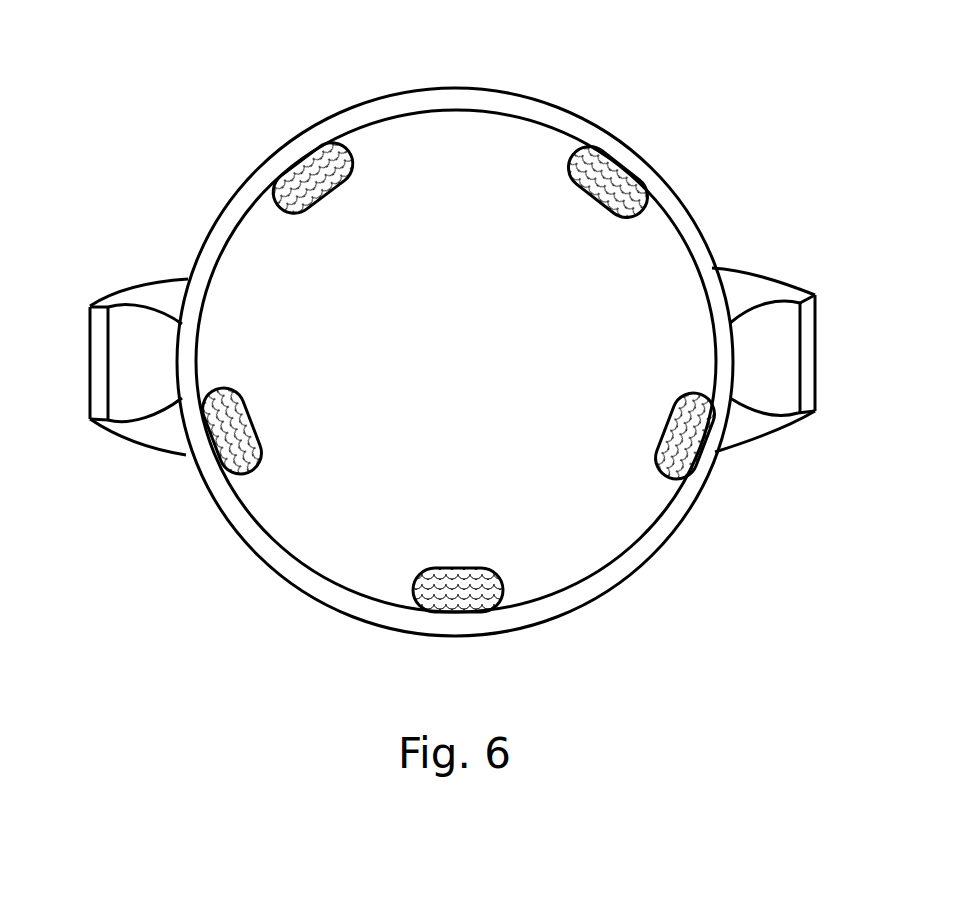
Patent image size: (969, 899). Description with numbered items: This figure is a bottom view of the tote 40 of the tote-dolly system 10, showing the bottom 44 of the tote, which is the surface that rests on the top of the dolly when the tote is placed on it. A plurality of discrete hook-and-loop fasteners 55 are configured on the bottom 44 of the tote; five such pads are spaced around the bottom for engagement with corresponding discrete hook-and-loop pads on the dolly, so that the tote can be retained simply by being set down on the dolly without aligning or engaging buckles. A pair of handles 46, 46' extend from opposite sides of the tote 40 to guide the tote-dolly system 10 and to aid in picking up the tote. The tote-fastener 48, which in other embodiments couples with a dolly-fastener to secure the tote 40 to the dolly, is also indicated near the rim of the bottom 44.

The tote-dolly system 10 is at (255, 133).
The tote 40 is at (244, 198).
The bottom of the tote 44 is at (382, 178).
The handle 46 is at (108, 328).
The handle 46' is at (807, 329).
The tote-fastener 48 is at (632, 168).
The discrete hook-and-loop fastener 55 is at (612, 140).